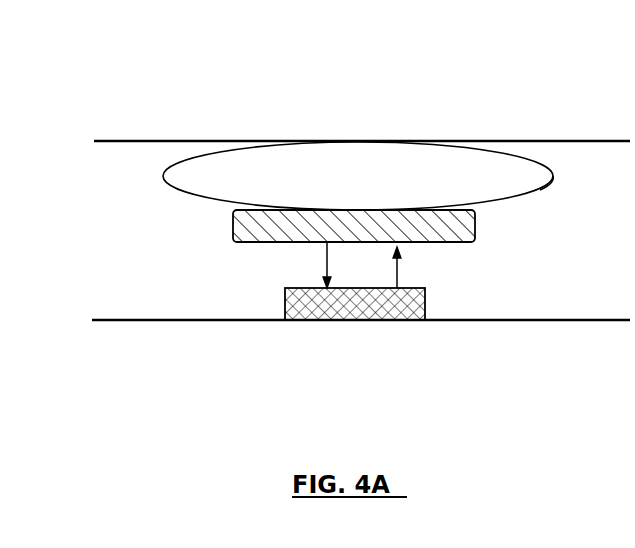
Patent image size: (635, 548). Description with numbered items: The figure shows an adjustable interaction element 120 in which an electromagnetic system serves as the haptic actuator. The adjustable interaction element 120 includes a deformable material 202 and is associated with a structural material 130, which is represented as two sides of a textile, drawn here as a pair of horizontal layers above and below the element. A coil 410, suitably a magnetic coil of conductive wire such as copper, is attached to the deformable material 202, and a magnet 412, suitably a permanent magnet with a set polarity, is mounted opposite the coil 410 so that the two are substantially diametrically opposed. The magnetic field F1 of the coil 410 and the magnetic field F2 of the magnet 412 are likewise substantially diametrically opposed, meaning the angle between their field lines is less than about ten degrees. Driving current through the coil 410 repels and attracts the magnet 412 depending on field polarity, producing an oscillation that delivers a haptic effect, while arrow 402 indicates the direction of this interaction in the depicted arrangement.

The adjustable interaction element 120 is at (213, 148).
The structural material 130 is at (565, 138).
The deformable material 202 is at (553, 183).
The direction of movement 402 is at (262, 272).
The coil 410 is at (460, 240).
The magnet 412 is at (425, 310).
The magnetic field of coil F1 is at (312, 265).
The magnetic field of magnet F2 is at (412, 267).